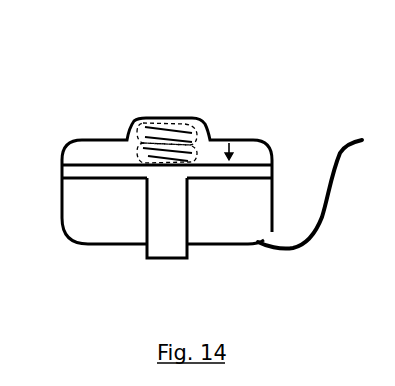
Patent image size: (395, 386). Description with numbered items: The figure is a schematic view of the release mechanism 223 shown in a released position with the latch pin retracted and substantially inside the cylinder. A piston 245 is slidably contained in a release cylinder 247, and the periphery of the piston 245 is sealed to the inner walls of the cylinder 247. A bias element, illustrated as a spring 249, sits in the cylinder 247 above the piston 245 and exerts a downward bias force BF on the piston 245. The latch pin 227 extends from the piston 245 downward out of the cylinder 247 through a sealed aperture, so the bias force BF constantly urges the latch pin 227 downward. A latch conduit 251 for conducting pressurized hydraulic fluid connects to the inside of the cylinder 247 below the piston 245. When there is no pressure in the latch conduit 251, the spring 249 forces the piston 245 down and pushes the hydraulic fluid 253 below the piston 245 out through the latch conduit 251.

The release mechanism 223 is at (195, 157).
The piston 245 is at (98, 163).
The release cylinder 247 is at (244, 150).
The spring 249 is at (164, 127).
The bias force BF is at (235, 150).
The latch pin 227 is at (188, 237).
The hydraulic fluid 253 is at (240, 220).
The latch conduit 251 is at (300, 248).